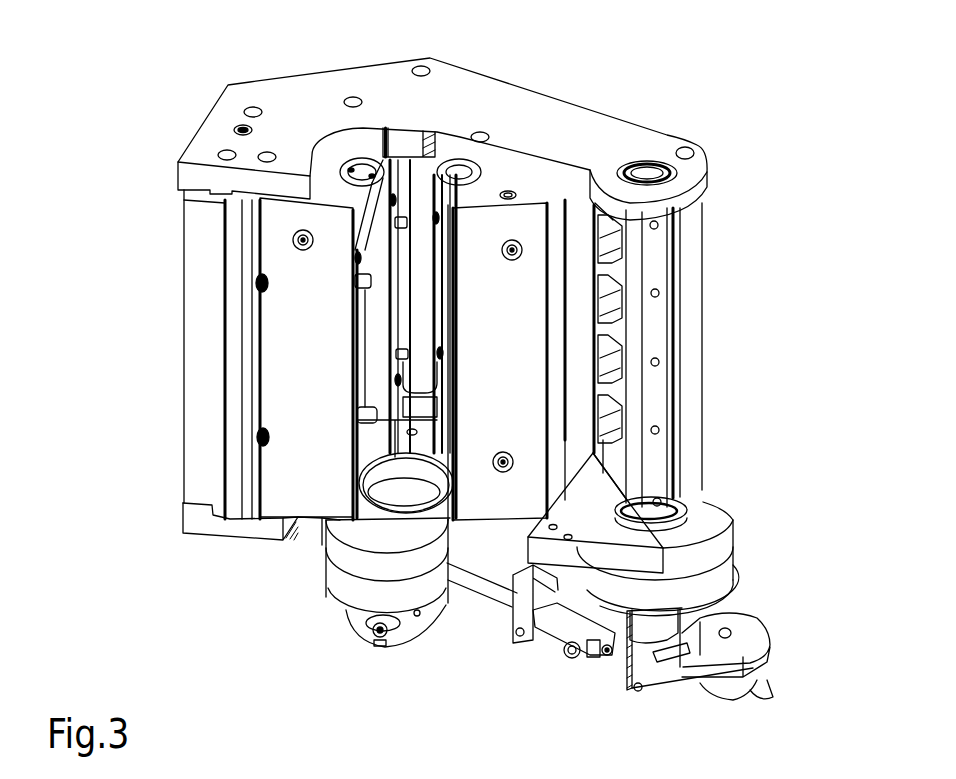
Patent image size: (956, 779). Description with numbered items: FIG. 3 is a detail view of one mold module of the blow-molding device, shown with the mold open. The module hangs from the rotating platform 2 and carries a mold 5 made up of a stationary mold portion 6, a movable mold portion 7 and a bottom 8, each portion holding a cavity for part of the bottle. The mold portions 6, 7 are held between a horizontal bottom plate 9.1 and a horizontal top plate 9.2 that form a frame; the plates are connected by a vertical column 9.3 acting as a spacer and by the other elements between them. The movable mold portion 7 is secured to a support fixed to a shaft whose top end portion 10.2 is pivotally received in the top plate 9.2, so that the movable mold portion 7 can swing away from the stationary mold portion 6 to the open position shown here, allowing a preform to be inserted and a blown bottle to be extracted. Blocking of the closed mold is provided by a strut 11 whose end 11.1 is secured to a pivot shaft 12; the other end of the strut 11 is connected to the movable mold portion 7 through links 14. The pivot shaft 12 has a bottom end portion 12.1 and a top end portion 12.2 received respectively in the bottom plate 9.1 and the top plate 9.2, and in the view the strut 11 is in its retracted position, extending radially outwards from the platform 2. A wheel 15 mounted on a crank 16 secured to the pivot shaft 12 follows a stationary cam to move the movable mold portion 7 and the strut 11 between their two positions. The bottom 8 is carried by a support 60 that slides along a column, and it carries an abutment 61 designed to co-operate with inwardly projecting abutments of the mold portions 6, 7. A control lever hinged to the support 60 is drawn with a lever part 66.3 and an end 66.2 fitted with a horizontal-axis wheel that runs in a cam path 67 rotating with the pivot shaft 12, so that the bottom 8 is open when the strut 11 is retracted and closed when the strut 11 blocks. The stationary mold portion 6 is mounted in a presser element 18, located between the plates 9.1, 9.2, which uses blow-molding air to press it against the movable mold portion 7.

The platform 2 is at (632, 132).
The mold 5 is at (324, 180).
The stationary mold portion 6 is at (285, 378).
The movable mold portion 7 is at (483, 193).
The bottom 8 is at (338, 572).
The bottom plate 9.1 is at (190, 523).
The top plate 9.2 is at (178, 162).
The vertical column 9.3 is at (698, 362).
The top end portion 10.2 is at (428, 66).
The strut 11 is at (617, 273).
The end 11.1 is at (623, 483).
The pivot shaft 12 is at (655, 393).
The bottom end portion 12.1 is at (717, 502).
The top end portion 12.2 is at (647, 173).
The links 14 is at (548, 540).
The wheel 15 is at (774, 690).
The crank 16 is at (672, 683).
The presser element 18 is at (172, 303).
The support 60 is at (345, 624).
The abutment 61 is at (375, 517).
The end 66.2 is at (577, 663).
The clamp upper part 66.3 is at (540, 645).
The cam path 67 is at (610, 655).